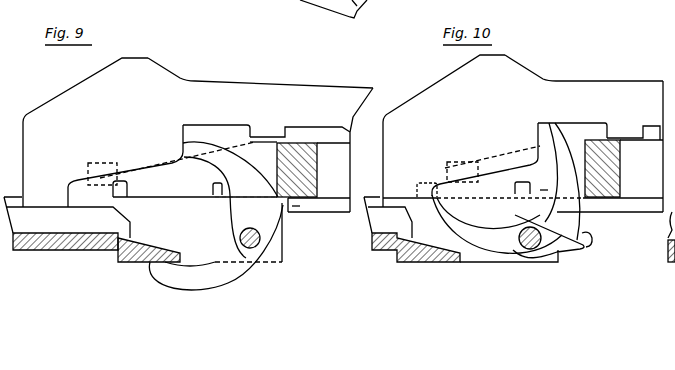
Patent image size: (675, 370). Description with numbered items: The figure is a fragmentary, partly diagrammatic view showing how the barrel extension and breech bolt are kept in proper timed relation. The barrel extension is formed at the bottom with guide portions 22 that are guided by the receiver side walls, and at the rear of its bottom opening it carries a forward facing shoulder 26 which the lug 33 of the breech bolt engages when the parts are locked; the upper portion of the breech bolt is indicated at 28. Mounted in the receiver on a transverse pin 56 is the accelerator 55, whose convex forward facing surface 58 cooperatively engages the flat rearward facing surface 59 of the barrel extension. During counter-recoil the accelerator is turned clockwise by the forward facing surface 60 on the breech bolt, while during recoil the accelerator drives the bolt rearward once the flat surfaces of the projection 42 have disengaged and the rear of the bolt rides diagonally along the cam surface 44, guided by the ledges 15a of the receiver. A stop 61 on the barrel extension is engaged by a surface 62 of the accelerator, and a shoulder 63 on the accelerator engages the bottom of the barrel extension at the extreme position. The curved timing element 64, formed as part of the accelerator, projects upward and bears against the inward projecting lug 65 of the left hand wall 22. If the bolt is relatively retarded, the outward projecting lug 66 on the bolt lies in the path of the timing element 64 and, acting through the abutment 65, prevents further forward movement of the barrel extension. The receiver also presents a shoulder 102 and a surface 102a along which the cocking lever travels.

In FIG. 9, the guide portion 22 is at (351, 163).
In FIG. 10, the guide portion 22 is at (638, 188).
In FIG. 9, the forward facing shoulder 26 is at (320, 158).
In FIG. 10, the forward facing shoulder 26 is at (621, 157).
In FIG. 9, the top wall 28 is at (245, 83).
In FIG. 10, the top wall 28 is at (608, 85).
In FIG. 9, the lug 33 is at (253, 138).
In FIG. 10, the lug 33 is at (609, 136).
In FIG. 9, the projection 42 is at (144, 68).
In FIG. 10, the projection 42 is at (485, 67).
In FIG. 9, the cam surface 44 is at (178, 76).
In FIG. 10, the cam surface 44 is at (527, 67).
In FIG. 9, the accelerator 55 is at (287, 208).
In FIG. 10, the accelerator 55 is at (568, 252).
In FIG. 9, the transverse pin 56 is at (253, 243).
In FIG. 10, the transverse pin 56 is at (533, 250).
In FIG. 9, the convex forward facing surface 58 is at (218, 167).
In FIG. 10, the convex forward facing surface 58 is at (562, 134).
In FIG. 9, the flat rearward facing surface 59 is at (277, 156).
In FIG. 9, the forward facing surface 60 is at (176, 132).
In FIG. 10, the forward facing surface 60 is at (540, 123).
In FIG. 9, the stop 61 is at (218, 196).
In FIG. 10, the stop 61 is at (516, 191).
In FIG. 9, the surface 62 is at (226, 206).
In FIG. 10, the surface 62 is at (543, 190).
In FIG. 9, the shoulder 63 is at (306, 207).
In FIG. 10, the shoulder 63 is at (591, 246).
In FIG. 9, the timing element 64 is at (206, 284).
In FIG. 10, the timing element 64 is at (447, 212).
In FIG. 9, the inward projecting lug 65 is at (127, 195).
In FIG. 10, the inward projecting lug 65 is at (418, 183).
In FIG. 9, the outward projecting lug 66 is at (103, 170).
In FIG. 10, the outward projecting lug 66 is at (463, 162).
In FIG. 9, the shoulder 102 is at (180, 259).
In FIG. 10, the shoulder 102 is at (462, 258).
In FIG. 9, the surface 102a is at (47, 233).
In FIG. 9, the ledge 15a is at (108, 209).
In FIG. 10, the ledge 15a is at (388, 217).